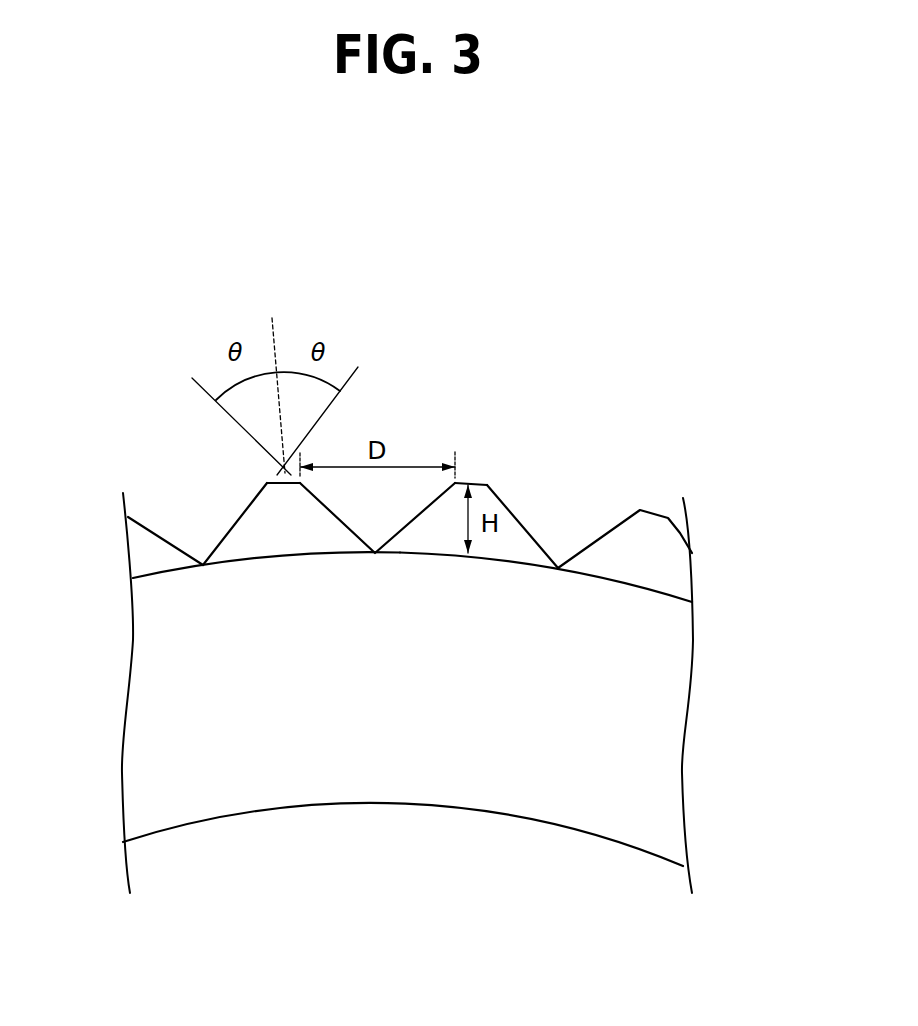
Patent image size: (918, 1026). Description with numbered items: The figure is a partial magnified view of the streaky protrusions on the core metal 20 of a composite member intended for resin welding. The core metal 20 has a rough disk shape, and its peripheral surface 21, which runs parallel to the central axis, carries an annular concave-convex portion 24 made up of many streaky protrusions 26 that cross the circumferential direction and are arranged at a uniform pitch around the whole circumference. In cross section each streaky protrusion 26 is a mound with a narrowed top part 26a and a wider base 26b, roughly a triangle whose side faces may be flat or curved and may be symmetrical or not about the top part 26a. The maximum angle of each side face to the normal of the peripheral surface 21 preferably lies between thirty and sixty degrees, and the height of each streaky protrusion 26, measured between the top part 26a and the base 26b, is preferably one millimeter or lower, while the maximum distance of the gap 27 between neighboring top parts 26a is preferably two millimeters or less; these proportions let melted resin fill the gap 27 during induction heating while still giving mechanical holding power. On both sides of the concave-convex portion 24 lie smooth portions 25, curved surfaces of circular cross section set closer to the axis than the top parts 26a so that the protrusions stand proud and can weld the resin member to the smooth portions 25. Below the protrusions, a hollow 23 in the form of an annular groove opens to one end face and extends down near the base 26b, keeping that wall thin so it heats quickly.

The core metal 20 is at (634, 381).
The peripheral surface 21 is at (655, 510).
The hollow 23 is at (632, 843).
The concave-convex portion 24 is at (259, 560).
The smooth portion 25 is at (643, 587).
The streaky protrusion 26 is at (234, 527).
The top part 26a is at (258, 492).
The base 26b is at (201, 566).
The gap 27 is at (148, 507).